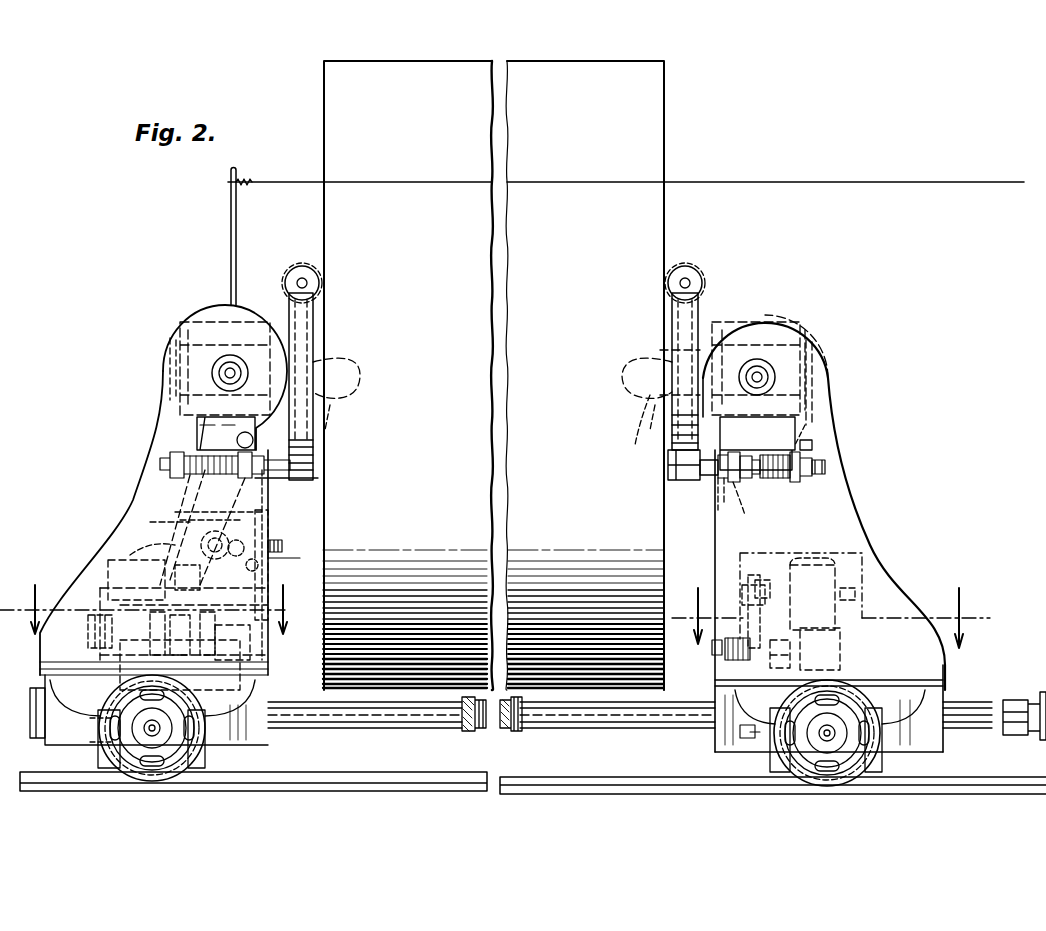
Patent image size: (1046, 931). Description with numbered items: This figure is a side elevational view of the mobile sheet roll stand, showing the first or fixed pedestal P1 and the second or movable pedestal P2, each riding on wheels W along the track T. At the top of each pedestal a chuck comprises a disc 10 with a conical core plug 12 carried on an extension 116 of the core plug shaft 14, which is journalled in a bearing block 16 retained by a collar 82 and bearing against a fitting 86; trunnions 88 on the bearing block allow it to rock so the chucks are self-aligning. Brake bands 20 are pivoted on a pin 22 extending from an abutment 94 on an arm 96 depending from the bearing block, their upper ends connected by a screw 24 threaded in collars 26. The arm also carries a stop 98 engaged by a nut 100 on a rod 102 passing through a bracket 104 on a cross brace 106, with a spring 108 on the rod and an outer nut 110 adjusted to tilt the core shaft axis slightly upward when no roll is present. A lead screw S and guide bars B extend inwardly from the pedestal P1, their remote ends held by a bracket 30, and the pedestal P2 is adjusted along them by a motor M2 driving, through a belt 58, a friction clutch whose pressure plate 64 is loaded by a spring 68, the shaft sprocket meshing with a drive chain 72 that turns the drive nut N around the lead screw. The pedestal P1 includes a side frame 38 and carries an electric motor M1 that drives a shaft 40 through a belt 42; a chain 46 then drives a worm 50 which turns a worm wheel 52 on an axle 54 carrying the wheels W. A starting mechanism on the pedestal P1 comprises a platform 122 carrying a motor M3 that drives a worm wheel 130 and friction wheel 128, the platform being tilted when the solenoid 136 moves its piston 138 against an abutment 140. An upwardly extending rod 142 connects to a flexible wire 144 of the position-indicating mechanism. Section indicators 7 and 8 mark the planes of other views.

The flexible wire 144 is at (893, 184).
The upwardly extending rod 142 is at (237, 214).
The first or fixed pedestal P1 is at (129, 470).
The second or movable pedestal P2 is at (877, 485).
The bearing block 16 is at (207, 325).
The trunnions 88 is at (222, 368).
The brake bands 20 is at (695, 325).
The screw 24 is at (686, 283).
The collars 26 is at (703, 283).
The disc 10 is at (663, 325).
The conical core plug 12 is at (335, 395).
The fitting 86 is at (668, 347).
The extension of the core shaft 116 is at (655, 445).
The pin 22 is at (670, 470).
The abutment 94 is at (706, 478).
The arm 96 is at (716, 495).
The abutment or stop 98 is at (738, 495).
The nut 100 is at (750, 478).
The spring 108 is at (790, 475).
The nut 110 is at (812, 470).
The rod 102 is at (825, 465).
The bracket 104 is at (805, 448).
The cross brace 106 is at (800, 428).
The collar 82 is at (800, 350).
The core plug shaft 14 is at (790, 372).
The motor M2 is at (810, 570).
The belt 58 is at (750, 605).
The spring 68 is at (712, 658).
The movable pressure applying plate 64 is at (770, 660).
The drive chain 72 is at (790, 680).
The section line 7- 7 is at (829, 618).
The motor M3 is at (198, 540).
The worm wheel 130 is at (290, 523).
The friction wheel 128 is at (278, 560).
The platform 122 is at (215, 560).
The abutment 140 is at (180, 575).
The solenoid 136 is at (125, 548).
The solenoid piston 138 is at (148, 580).
The shaft 40 is at (128, 615).
The section line 8- 8 is at (155, 609).
The chain 46 is at (92, 638).
The worm 50 is at (175, 630).
The belt 42 is at (240, 645).
The electric motor M1 is at (195, 672).
The side frame 38 is at (250, 742).
The worm wheel 52 is at (100, 728).
The axle 54 is at (148, 730).
The wheels W is at (170, 775).
The drive nut N is at (745, 738).
The guide bars B is at (345, 732).
The bracket 30 is at (1040, 700).
The lead screw S is at (485, 733).
The track T is at (603, 778).